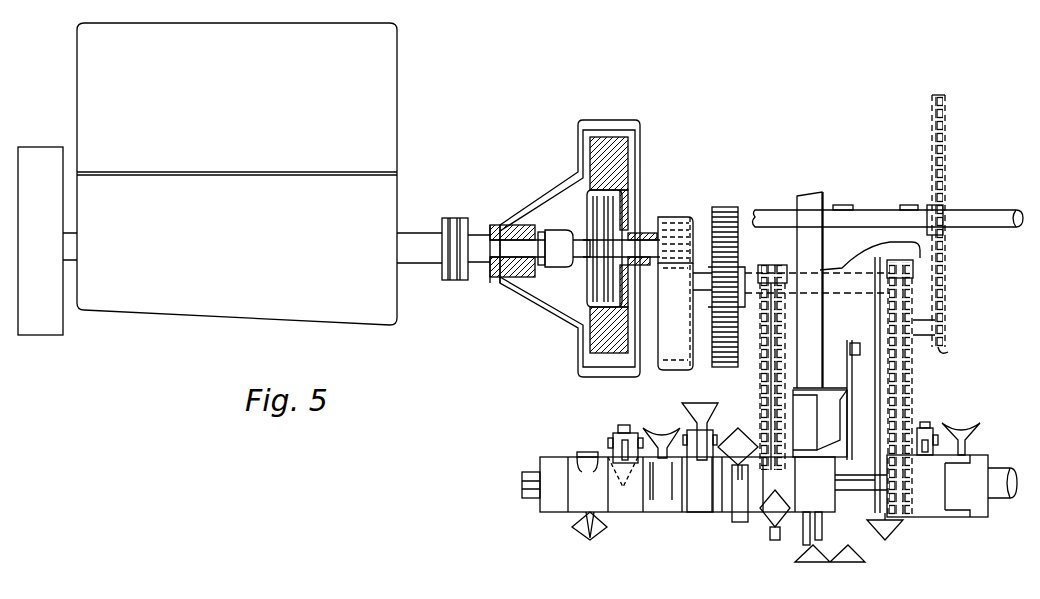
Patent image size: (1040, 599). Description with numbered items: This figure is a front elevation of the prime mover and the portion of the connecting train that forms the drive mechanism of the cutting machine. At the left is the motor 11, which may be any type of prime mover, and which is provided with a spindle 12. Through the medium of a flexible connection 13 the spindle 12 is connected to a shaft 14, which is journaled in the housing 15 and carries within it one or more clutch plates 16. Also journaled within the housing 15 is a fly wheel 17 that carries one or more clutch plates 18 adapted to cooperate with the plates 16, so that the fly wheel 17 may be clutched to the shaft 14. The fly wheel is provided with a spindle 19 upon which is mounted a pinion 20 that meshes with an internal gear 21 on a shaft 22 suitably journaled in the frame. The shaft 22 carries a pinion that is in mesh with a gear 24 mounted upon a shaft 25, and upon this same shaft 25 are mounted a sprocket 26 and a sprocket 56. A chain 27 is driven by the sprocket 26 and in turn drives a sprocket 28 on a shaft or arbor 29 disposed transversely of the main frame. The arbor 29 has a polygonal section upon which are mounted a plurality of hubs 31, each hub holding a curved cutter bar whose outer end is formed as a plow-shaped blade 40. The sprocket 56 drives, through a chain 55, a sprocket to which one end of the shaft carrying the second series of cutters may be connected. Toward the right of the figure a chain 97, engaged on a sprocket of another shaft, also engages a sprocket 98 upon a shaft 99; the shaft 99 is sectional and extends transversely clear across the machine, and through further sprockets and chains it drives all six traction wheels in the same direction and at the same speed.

The motor 11 is at (207, 179).
The spindle 12 is at (430, 255).
The flexible connection 13 is at (458, 282).
The shaft 14 is at (520, 253).
The housing 15 is at (555, 186).
The clutch plates 16 is at (582, 222).
The fly wheel 17 is at (622, 150).
The clutch plates 18 is at (588, 302).
The spindle 19 is at (652, 236).
The pinion 20 is at (682, 225).
The internal gear 21 is at (668, 348).
The shaft 22 is at (700, 292).
The gear 24 is at (730, 210).
The shaft 25 is at (748, 305).
The sprocket 26 is at (892, 252).
The chain 27 is at (912, 380).
The sprocket 28 is at (905, 517).
The shaft or arbor 29 is at (532, 498).
The hubs 31 is at (667, 507).
The plow-shaped blade 40 is at (596, 527).
The chain 55 is at (762, 367).
The sprocket 56 is at (782, 265).
The chain 97 is at (945, 347).
The sprocket 98 is at (946, 192).
The shaft 99 is at (999, 213).